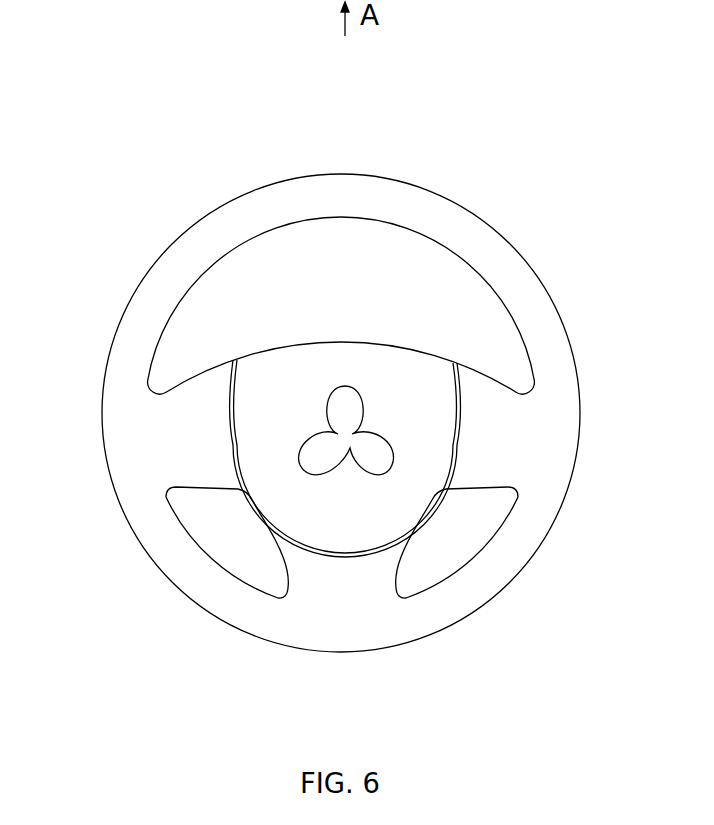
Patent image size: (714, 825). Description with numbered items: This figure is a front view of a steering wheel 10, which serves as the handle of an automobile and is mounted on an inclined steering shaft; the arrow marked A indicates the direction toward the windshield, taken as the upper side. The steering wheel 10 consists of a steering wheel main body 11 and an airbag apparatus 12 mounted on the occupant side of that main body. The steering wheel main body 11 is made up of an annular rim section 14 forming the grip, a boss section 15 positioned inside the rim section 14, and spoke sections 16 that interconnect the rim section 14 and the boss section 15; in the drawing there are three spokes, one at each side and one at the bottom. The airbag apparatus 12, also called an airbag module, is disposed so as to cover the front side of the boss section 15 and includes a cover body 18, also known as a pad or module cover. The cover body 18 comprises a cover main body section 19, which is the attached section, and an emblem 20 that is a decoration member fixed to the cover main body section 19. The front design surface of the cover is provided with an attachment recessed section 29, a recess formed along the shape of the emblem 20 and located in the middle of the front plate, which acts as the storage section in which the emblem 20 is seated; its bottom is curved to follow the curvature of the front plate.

The steering wheel 10 is at (433, 137).
The steering wheel main body 11 is at (588, 346).
The airbag apparatus 12 is at (450, 531).
The rim section 14 is at (470, 216).
The boss section 15 is at (400, 350).
The spoke sections 16 is at (195, 425).
The cover body 18 is at (287, 360).
The cover main body section 19 is at (263, 453).
The emblem 20 is at (349, 373).
The attachment recessed section 29 is at (375, 440).